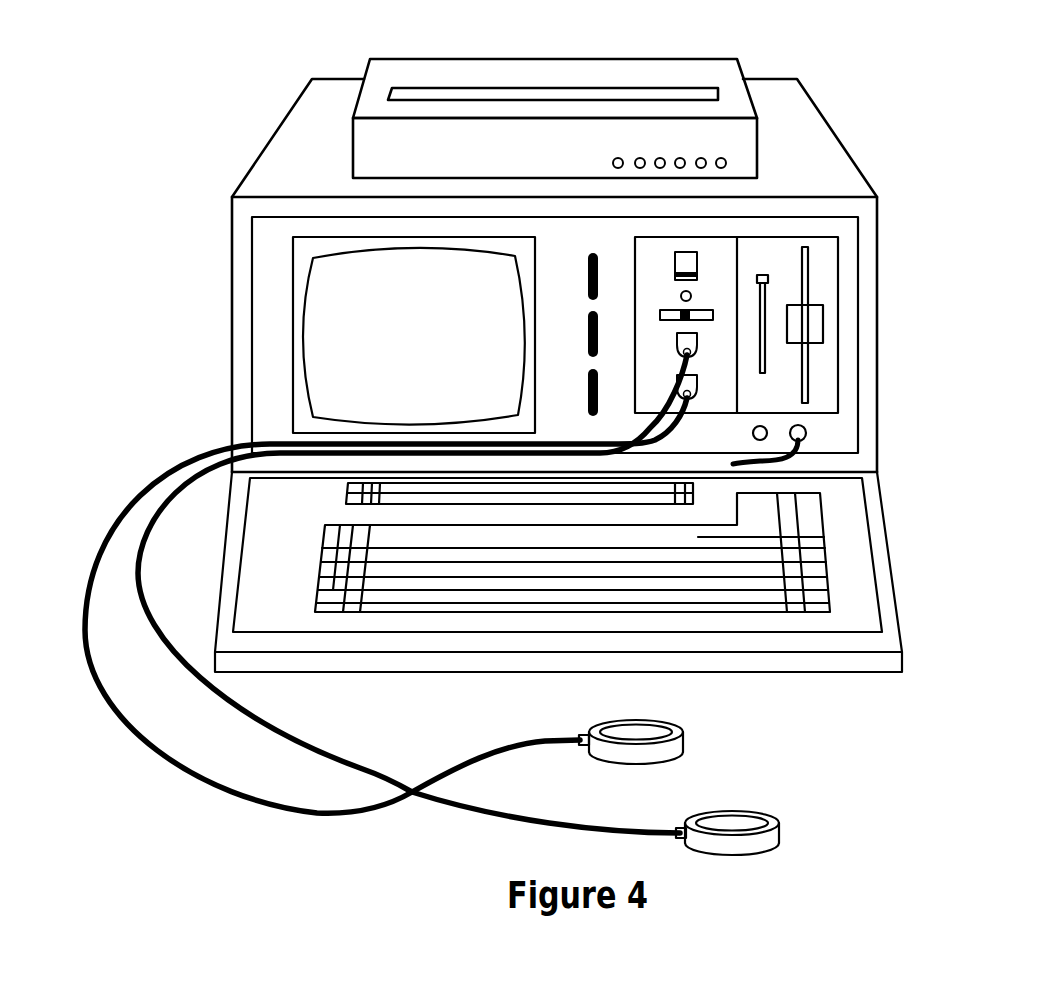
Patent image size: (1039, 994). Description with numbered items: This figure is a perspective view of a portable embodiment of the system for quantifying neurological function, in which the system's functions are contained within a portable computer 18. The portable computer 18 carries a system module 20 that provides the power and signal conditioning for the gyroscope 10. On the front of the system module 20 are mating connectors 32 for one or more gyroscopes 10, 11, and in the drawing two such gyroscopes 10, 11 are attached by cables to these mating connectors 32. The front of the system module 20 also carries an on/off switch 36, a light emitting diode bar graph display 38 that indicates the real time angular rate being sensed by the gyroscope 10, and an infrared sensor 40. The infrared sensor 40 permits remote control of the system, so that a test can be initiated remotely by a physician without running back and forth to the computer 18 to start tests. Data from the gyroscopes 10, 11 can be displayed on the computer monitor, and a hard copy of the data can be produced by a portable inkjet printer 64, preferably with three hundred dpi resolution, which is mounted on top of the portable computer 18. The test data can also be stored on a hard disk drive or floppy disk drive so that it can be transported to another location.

The portable computer 18 is at (242, 357).
The portable inkjet printer 64 is at (717, 147).
The on/off switch 36 is at (697, 262).
The infrared sensor 40 is at (692, 296).
The light emitting diode (LED) bar graph display 38 is at (713, 315).
The mating connectors 32 is at (697, 347).
The system module 20 is at (697, 390).
The gyroscope 10 is at (680, 721).
The gyroscope 11 is at (753, 813).